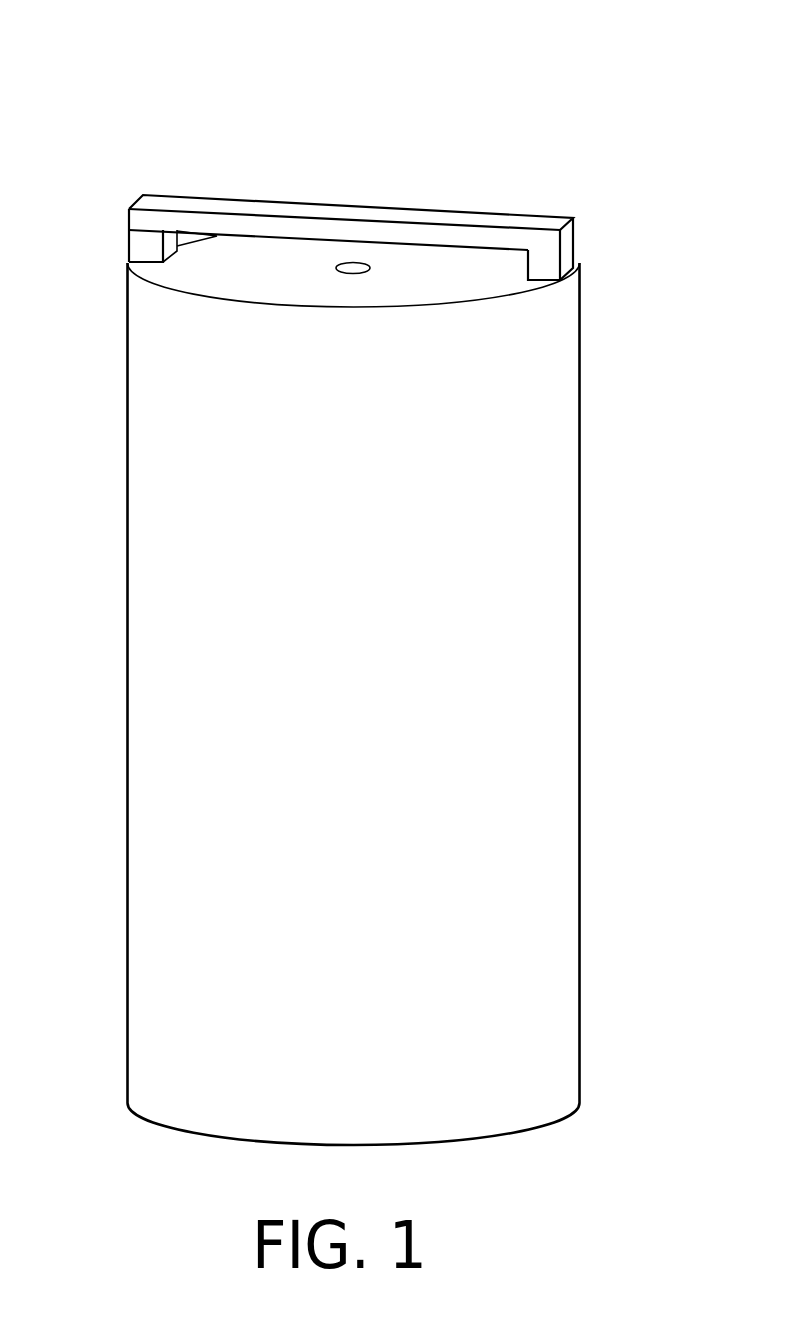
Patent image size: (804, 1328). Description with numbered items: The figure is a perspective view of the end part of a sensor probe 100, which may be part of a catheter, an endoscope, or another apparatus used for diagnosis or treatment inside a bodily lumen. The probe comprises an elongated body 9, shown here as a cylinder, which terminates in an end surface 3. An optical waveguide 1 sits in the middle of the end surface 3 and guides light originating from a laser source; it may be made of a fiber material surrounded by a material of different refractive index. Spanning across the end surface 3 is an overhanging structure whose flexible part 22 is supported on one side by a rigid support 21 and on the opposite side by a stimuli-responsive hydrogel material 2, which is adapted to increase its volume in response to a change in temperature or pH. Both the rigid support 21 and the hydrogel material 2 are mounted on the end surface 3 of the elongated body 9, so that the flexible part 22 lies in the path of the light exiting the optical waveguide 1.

The sensor probe 100 is at (134, 79).
The elongated body 9 is at (143, 486).
The end surface 3 is at (440, 273).
The optical waveguide 1 is at (355, 274).
The flexible part 22 is at (231, 207).
The stimuli-responsive hydrogel material 2 is at (142, 246).
The rigid support 21 is at (547, 248).